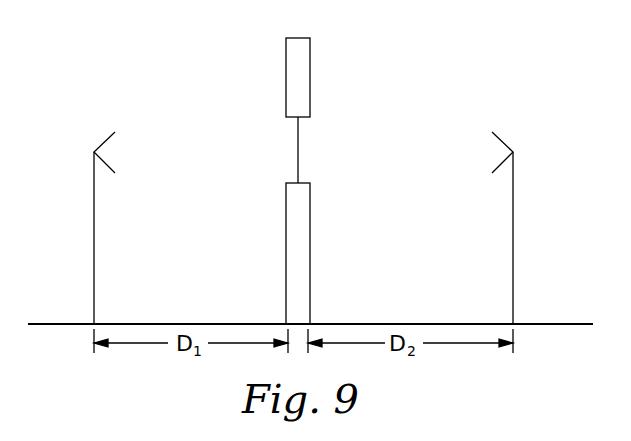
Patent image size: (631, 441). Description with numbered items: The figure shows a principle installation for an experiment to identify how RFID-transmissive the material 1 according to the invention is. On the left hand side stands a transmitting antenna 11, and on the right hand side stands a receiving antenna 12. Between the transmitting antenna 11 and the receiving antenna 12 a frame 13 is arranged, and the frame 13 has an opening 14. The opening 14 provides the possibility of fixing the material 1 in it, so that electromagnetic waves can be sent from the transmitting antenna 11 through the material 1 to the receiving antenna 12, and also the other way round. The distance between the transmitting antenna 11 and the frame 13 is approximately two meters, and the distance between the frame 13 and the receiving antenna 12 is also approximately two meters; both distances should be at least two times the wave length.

The material 1 is at (297, 148).
The transmitting antenna 11 is at (93, 215).
The receiving antenna 12 is at (514, 224).
The frame 13 is at (293, 70).
The opening 14 is at (349, 127).